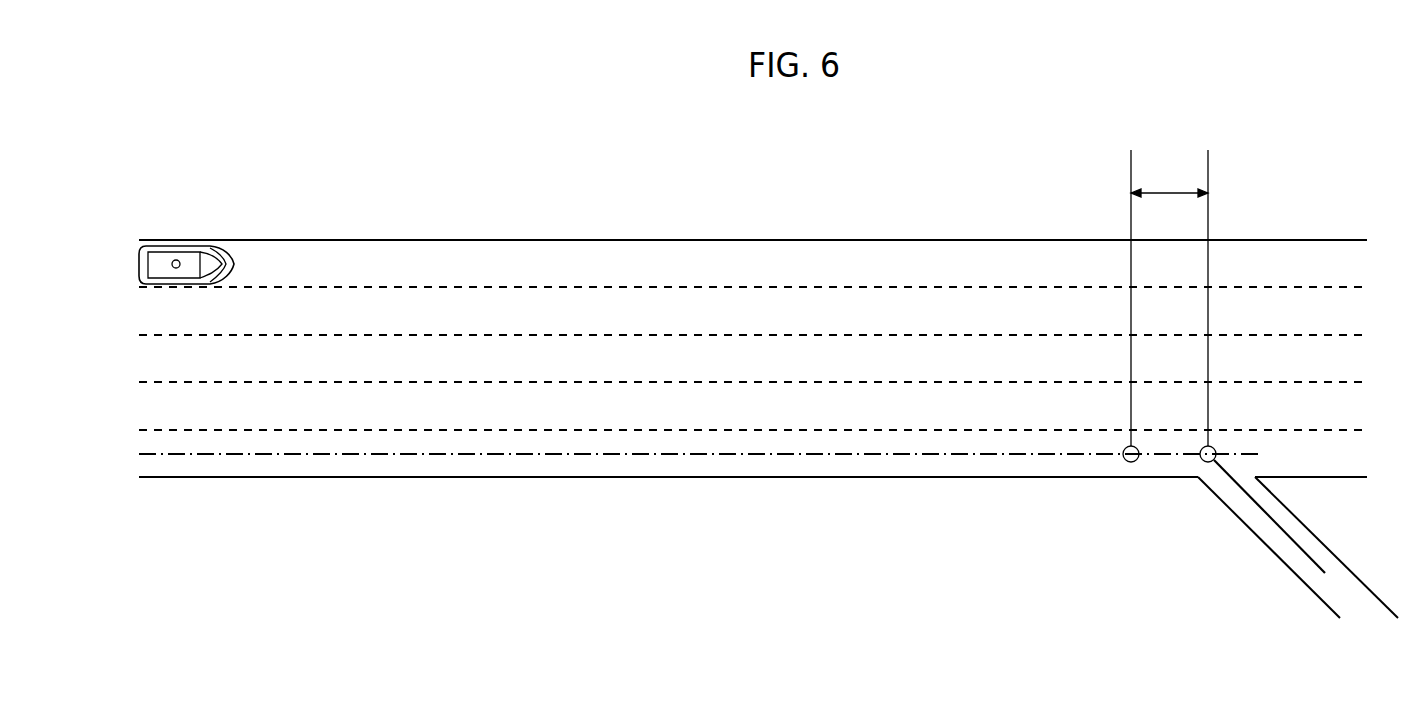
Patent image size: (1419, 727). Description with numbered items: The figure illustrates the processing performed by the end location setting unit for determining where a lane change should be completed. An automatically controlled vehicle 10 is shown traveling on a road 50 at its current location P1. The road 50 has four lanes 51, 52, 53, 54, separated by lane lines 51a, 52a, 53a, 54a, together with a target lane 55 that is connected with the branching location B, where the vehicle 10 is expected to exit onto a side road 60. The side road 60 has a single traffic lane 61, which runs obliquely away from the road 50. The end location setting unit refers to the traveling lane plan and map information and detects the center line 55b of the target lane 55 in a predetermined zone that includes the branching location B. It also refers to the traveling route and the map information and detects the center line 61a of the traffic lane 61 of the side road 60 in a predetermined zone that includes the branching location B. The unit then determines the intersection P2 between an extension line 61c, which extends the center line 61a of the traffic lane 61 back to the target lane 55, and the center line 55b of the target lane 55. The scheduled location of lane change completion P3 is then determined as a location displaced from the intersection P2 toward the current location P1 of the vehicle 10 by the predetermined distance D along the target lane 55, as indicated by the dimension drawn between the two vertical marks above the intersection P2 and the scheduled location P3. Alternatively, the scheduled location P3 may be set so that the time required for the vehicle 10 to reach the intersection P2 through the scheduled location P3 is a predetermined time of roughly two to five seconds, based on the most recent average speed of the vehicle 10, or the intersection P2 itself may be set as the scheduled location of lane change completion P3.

The vehicle 10 is at (160, 249).
The current location P1 is at (176, 259).
The road 50 is at (928, 232).
The predetermined distance D is at (1169, 298).
The lane 51 is at (1312, 275).
The lane line 51a is at (1387, 273).
The lane 52 is at (1312, 321).
The lane line 52a is at (1387, 320).
The lane 53 is at (1312, 371).
The lane line 53a is at (1387, 367).
The lane 54 is at (1312, 417).
The lane line 54a is at (1387, 415).
The target lane 55 is at (1312, 465).
The center line 55b is at (925, 455).
The scheduled location of lane change completion P3 is at (1125, 448).
The intersection P2 is at (1202, 448).
The branching location B is at (1197, 479).
The side road 60 is at (1262, 538).
The traffic lane 61 is at (1357, 600).
The center line 61a is at (1285, 530).
The extension line 61c is at (1222, 471).